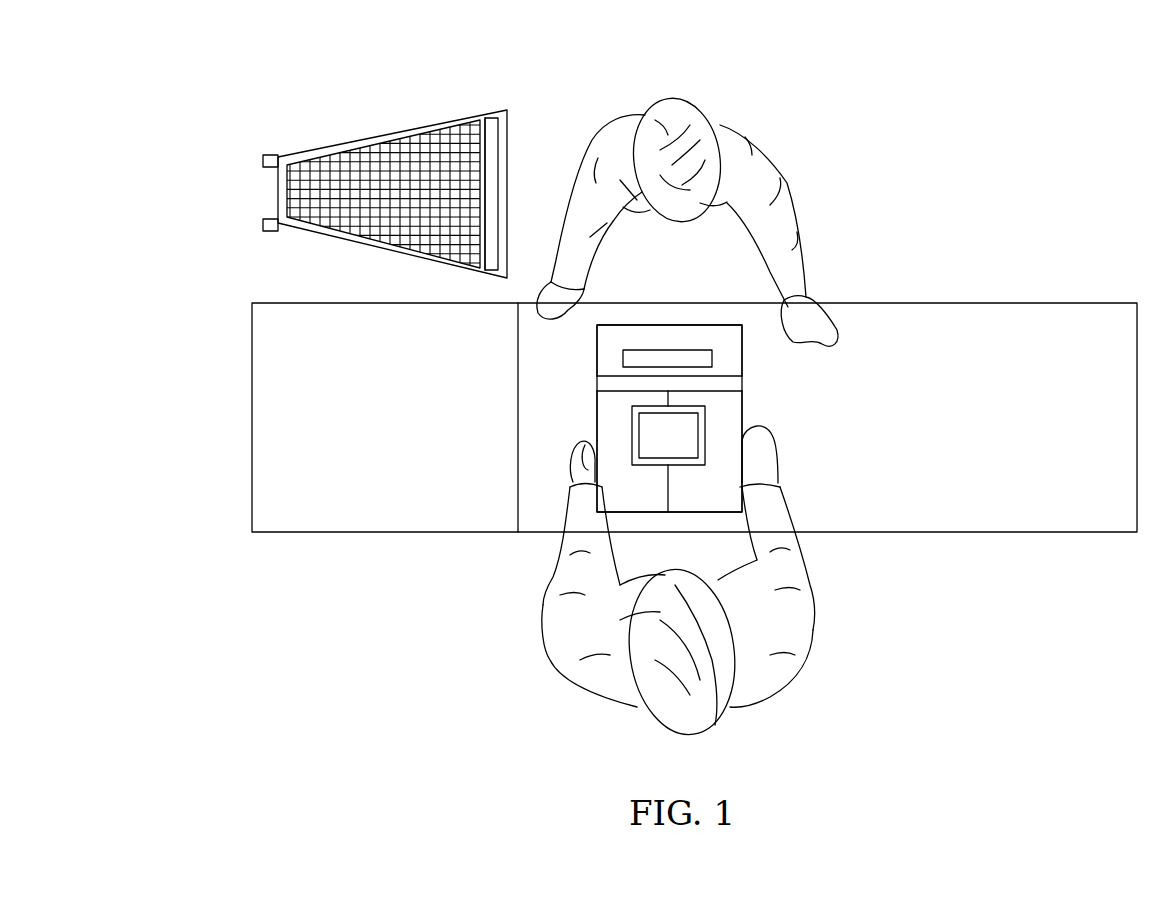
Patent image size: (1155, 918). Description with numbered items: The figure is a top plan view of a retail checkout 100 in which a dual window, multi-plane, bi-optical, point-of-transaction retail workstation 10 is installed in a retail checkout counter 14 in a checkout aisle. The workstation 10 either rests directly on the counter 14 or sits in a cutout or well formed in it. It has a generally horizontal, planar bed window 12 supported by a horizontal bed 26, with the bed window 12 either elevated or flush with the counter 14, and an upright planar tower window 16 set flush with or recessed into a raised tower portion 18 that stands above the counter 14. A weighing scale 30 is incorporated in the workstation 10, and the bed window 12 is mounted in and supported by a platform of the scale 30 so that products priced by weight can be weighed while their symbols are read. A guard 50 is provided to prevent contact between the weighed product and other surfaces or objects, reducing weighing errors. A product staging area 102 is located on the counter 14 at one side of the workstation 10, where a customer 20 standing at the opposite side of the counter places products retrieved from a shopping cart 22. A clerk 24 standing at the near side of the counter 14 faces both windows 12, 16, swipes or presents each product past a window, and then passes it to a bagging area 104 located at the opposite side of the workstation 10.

The retail checkout 100 is at (908, 101).
The retail workstation 10 is at (795, 413).
The bed window 12 is at (701, 466).
The retail checkout counter 14 is at (1082, 313).
The tower window 16 is at (637, 345).
The raised tower portion 18 is at (668, 325).
The customer 20 is at (674, 97).
The shopping cart 22 is at (378, 135).
The clerk 24 is at (547, 633).
The horizontal bed 26 is at (612, 408).
The weighing scale 30 is at (722, 454).
The guard 50 is at (752, 377).
The product staging area 102 is at (910, 313).
The bagging area 104 is at (270, 423).